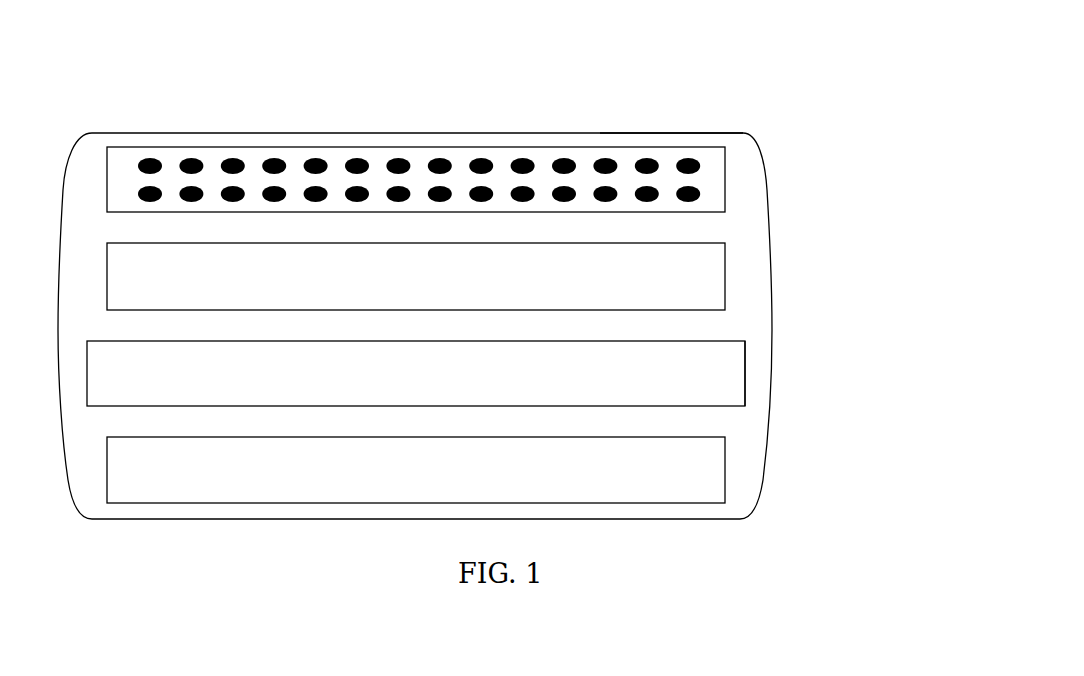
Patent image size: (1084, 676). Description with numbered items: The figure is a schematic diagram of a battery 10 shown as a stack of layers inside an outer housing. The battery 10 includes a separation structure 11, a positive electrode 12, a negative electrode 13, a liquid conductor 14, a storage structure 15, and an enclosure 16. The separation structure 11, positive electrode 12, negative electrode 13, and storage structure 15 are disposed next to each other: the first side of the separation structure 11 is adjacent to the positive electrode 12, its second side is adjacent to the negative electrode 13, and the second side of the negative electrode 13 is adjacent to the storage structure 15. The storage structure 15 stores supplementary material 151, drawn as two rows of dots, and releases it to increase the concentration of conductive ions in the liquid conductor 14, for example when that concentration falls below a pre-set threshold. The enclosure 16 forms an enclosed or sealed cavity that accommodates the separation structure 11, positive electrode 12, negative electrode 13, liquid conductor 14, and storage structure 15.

The battery 10 is at (357, 109).
The separation structure 11 is at (745, 372).
The positive electrode 12 is at (725, 470).
The negative electrode 13 is at (725, 275).
The liquid conductor 14 is at (737, 321).
The storage structure 15 is at (725, 178).
The supplementary material 151 is at (566, 164).
The enclosure 16 is at (692, 129).